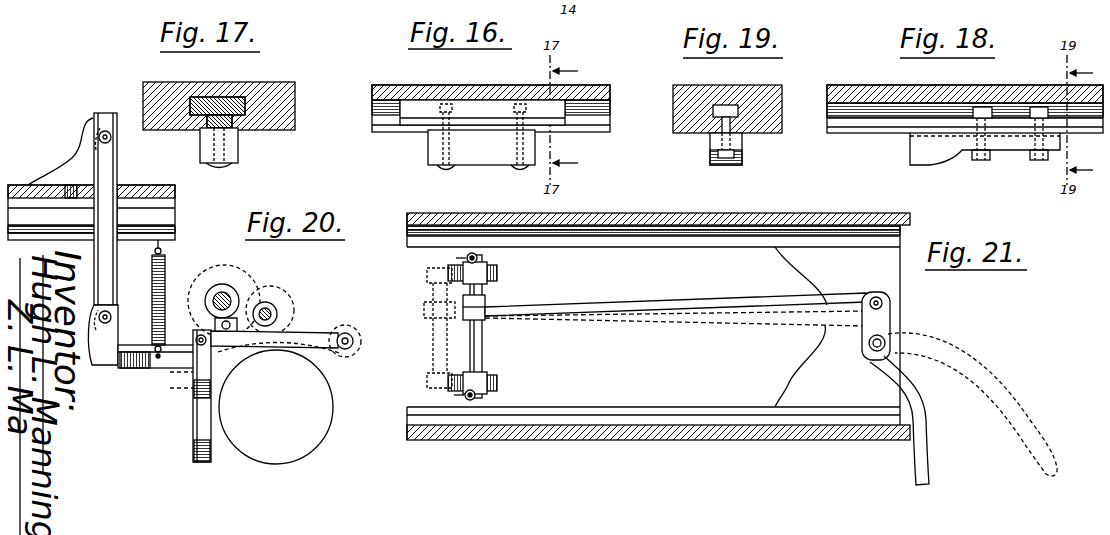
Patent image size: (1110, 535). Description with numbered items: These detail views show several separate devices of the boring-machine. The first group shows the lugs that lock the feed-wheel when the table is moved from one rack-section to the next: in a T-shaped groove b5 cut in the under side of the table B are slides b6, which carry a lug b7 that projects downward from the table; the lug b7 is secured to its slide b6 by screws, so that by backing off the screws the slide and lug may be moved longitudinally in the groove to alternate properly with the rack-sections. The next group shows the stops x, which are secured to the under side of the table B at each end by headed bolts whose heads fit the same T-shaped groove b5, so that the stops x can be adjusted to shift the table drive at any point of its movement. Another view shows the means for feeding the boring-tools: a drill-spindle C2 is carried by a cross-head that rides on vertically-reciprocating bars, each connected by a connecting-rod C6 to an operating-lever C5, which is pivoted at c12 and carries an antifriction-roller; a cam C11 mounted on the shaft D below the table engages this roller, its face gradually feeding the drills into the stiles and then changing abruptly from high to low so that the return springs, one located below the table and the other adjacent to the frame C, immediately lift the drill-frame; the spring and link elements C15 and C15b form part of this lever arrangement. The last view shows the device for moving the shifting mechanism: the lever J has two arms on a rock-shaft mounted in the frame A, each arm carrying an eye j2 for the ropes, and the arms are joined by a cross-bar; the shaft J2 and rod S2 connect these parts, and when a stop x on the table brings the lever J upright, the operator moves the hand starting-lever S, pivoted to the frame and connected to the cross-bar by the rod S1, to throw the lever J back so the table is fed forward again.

In FIG. 20, the frame A is at (160, 185).
In FIG. 21, the frame A is at (656, 213).
In FIG. 17, the table B is at (176, 82).
In FIG. 16, the table B is at (430, 85).
In FIG. 19, the table B is at (683, 85).
In FIG. 18, the table B is at (1032, 85).
In FIG. 17, the T-shaped groove b5 is at (210, 97).
In FIG. 16, the T-shaped groove b5 is at (372, 108).
In FIG. 17, the slides b6 is at (238, 97).
In FIG. 16, the slides b6 is at (485, 110).
In FIG. 17, the lug b7 is at (219, 148).
In FIG. 16, the lug b7 is at (481, 137).
In FIG. 19, the stops x is at (742, 146).
In FIG. 18, the stops x is at (910, 150).
In FIG. 20, the frame C is at (80, 157).
In FIG. 20, the drill-spindle C2 is at (107, 117).
In FIG. 20, the connecting-rod C6 is at (97, 257).
In FIG. 20, the spring / link arm C15 is at (151, 294).
In FIG. 20, the link arm C15 C15b is at (316, 336).
In FIG. 20, the operating-lever C5 is at (160, 362).
In FIG. 20, the cam C11 is at (222, 284).
In FIG. 20, the shaft D is at (258, 302).
In FIG. 20, the pivot c12 is at (350, 334).
In FIG. 21, the lever J is at (466, 329).
In FIG. 21, the gear shaft J2 is at (483, 352).
In FIG. 21, the eye j2 is at (456, 258).
In FIG. 21, the connecting rod S2 is at (628, 314).
In FIG. 21, the starting-lever S is at (916, 412).
In FIG. 21, the rod S1 is at (868, 350).